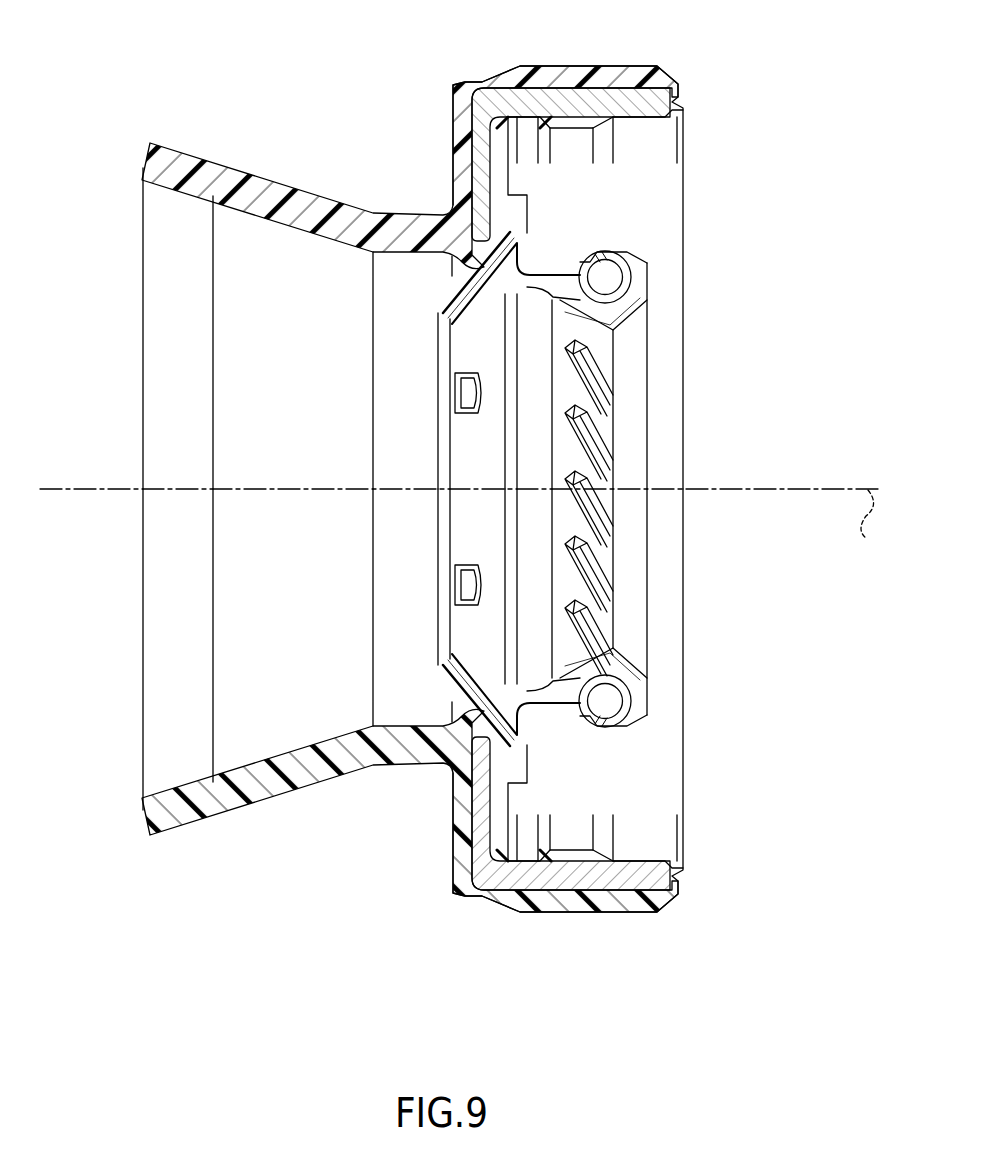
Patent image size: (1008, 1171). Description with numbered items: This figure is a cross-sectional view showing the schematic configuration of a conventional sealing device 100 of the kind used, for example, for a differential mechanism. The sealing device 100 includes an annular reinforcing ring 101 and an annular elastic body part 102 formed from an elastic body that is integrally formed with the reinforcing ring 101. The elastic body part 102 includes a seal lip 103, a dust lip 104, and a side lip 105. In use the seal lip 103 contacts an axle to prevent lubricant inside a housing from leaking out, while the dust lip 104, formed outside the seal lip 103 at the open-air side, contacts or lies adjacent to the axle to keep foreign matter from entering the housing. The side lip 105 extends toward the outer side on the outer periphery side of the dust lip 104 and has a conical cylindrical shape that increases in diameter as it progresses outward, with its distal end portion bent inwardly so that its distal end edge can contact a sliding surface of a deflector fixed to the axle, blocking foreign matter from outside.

The sealing device 100 is at (460, 1000).
The reinforcing ring 101 is at (643, 78).
The elastic body part 102 is at (452, 88).
The seal lip 103 is at (627, 320).
The dust lip 104 is at (455, 688).
The side lip 105 is at (294, 192).